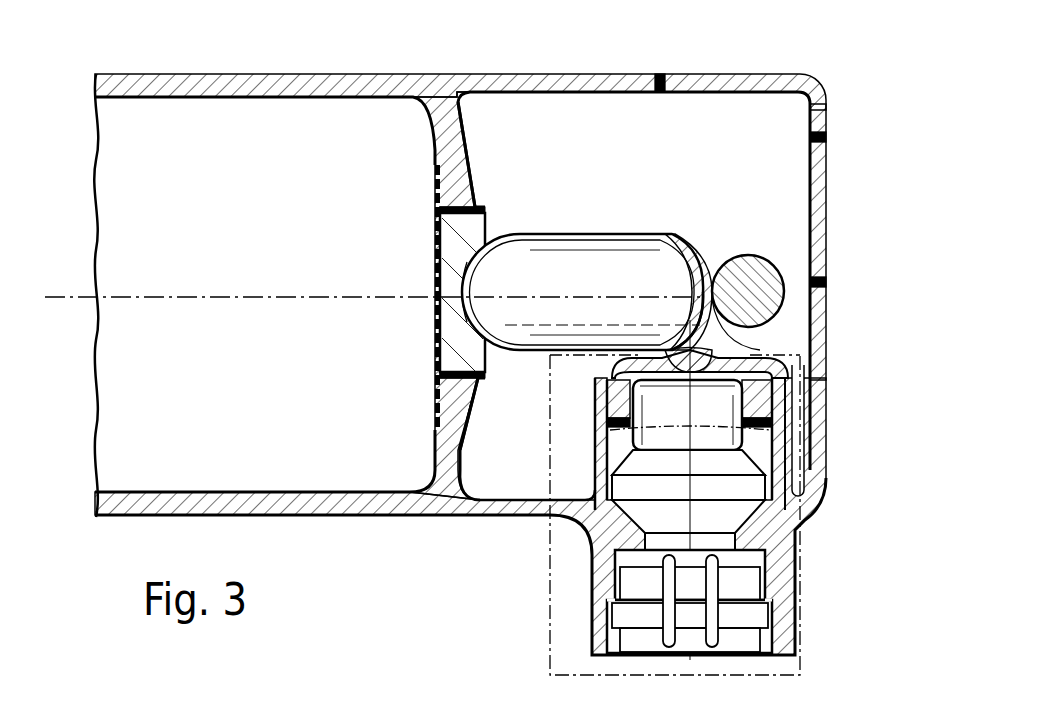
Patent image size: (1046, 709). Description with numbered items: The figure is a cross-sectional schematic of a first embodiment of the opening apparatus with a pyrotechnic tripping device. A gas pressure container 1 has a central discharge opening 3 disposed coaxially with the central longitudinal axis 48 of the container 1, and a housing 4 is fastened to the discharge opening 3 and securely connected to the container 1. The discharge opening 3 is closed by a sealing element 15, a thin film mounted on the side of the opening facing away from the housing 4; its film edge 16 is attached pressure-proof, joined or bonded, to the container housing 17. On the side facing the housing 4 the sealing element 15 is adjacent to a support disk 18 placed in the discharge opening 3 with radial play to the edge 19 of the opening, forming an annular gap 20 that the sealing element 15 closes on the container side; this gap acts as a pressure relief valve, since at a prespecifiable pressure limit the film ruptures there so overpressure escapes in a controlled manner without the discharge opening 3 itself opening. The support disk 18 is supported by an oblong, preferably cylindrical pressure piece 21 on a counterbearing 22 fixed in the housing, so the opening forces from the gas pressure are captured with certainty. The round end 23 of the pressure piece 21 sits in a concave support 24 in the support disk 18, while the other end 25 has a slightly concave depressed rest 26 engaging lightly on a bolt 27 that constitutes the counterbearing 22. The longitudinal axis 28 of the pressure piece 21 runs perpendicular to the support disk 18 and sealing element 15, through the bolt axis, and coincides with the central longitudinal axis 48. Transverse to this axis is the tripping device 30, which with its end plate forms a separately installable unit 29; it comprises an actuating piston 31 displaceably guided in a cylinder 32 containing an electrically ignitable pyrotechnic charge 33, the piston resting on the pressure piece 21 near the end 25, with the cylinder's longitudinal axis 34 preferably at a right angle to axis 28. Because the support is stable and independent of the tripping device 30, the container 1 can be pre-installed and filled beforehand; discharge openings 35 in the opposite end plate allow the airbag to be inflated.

The pressure container 1 is at (145, 432).
The central discharge opening 3 is at (433, 372).
The housing 4 is at (822, 70).
The sealing element 15 is at (448, 278).
The film edge 16 is at (438, 178).
The container housing 17 is at (140, 506).
The support disk 18 is at (445, 255).
The edge of the discharge opening 19 is at (476, 194).
The annular gap 20 is at (479, 382).
The pressure piece 21 is at (560, 250).
The counterbearing 22 is at (786, 266).
The round end of the pressure piece 23 is at (455, 358).
The concave support 24 is at (462, 316).
The other end of the pressure piece 25 is at (700, 275).
The depressed rest 26 is at (709, 292).
The bolt 27 is at (772, 308).
The longitudinal axis of the pressure piece 28 is at (596, 292).
The unit 29 is at (805, 645).
The tripping device 30 is at (767, 541).
The actuating piston 31 is at (795, 355).
The cylinder 32 is at (798, 450).
The pyrotechnic charge 33 is at (790, 425).
The longitudinal axis of the cylinder 34 is at (605, 445).
The discharge openings 35 is at (583, 77).
The central longitudinal axis 48 is at (62, 297).